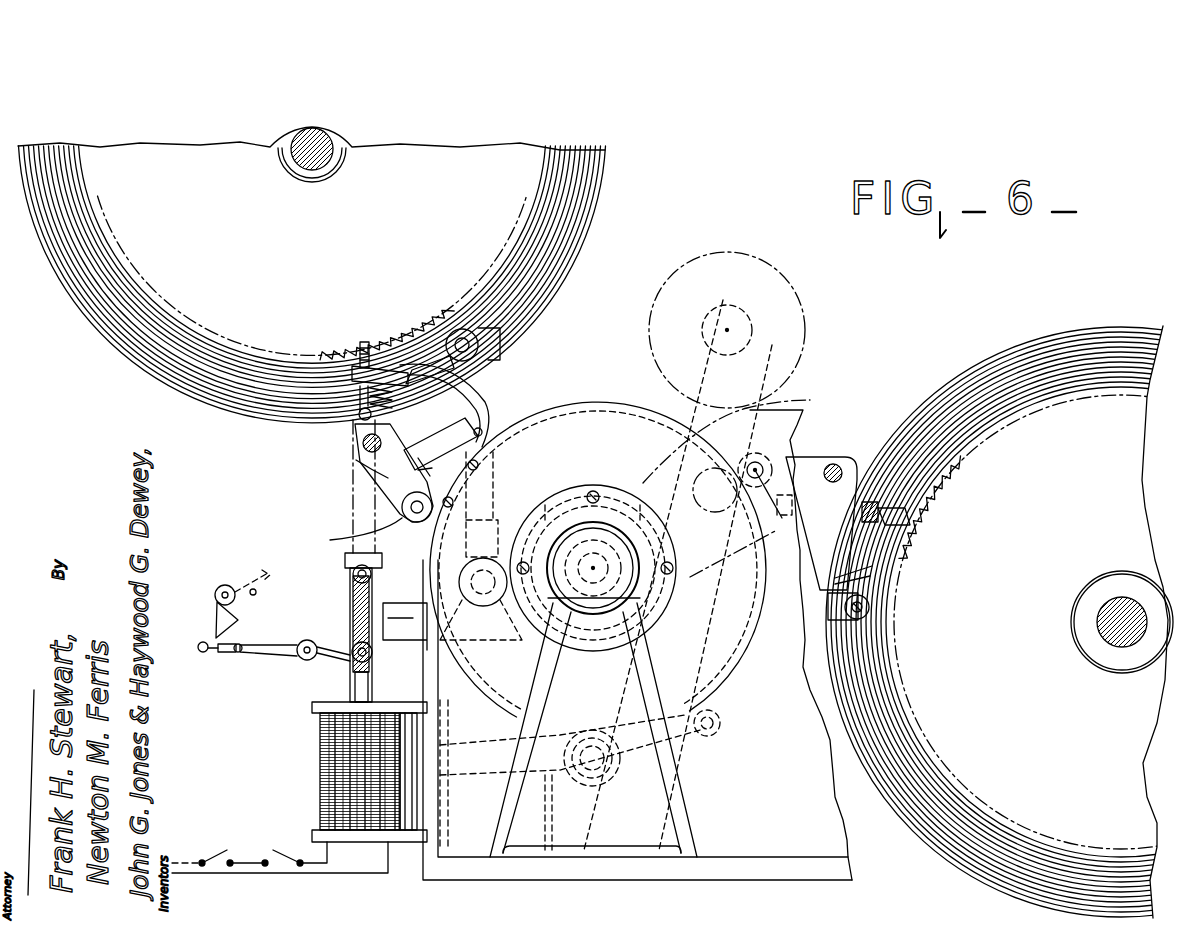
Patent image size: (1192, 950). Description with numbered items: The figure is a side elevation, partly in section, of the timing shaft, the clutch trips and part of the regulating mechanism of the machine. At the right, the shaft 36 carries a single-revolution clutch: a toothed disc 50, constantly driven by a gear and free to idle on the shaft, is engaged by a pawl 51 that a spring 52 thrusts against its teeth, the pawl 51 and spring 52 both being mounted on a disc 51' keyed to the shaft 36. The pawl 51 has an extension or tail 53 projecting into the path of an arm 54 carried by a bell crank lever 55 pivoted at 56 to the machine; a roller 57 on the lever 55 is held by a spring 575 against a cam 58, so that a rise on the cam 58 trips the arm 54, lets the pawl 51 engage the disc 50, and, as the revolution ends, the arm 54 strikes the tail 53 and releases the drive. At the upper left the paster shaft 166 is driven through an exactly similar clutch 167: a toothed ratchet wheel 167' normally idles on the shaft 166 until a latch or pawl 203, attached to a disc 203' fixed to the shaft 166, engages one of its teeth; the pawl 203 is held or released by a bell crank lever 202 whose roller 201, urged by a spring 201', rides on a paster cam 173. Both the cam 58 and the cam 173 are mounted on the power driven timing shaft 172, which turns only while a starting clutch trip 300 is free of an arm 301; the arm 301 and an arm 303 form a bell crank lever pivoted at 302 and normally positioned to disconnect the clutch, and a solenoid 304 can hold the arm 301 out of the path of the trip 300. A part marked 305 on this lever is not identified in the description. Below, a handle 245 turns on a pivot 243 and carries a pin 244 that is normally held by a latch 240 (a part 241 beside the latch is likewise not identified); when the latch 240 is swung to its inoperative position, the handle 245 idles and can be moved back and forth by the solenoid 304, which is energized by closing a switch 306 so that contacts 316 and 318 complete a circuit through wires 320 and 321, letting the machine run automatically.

The power driven shaft 166 is at (318, 162).
The single revolution clutch 167 is at (312, 275).
The toothed ratchet wheel 167' is at (323, 377).
The disc 203' is at (517, 341).
The pawl (latch) 203 is at (475, 372).
The bell crank lever 202 is at (482, 402).
The paster cam 173 is at (432, 437).
The roller 201 is at (365, 482).
The spring 201' is at (346, 464).
The solenoid 304 is at (353, 555).
The arm 303 is at (362, 582).
The pivot pin 305 is at (358, 628).
The arm 301 is at (523, 515).
The starting clutch trip 300 is at (603, 497).
The pivot 302 is at (481, 552).
The timing shaft 172 is at (596, 620).
The pivot of arm 241 is at (220, 588).
The latch 240 is at (216, 630).
The handle 245 is at (200, 655).
The pin 244 is at (240, 653).
The pivot 243 is at (308, 661).
The wire 320 is at (198, 860).
The contact 316 is at (219, 848).
The switch 306 is at (292, 852).
The wire 321 is at (281, 877).
The contact 318 is at (228, 866).
The roller 57 is at (790, 408).
The bell crank lever 55 is at (808, 456).
The pivot 56 is at (838, 465).
The spring 52 is at (864, 500).
The disc 51' is at (1009, 622).
The toothed disc 50 is at (912, 520).
The pawl 51 is at (920, 508).
The arm 54 is at (855, 573).
The extension (tail) 53 is at (866, 618).
The spring 575 is at (722, 535).
The cam 58 is at (637, 590).
The shaft 36 is at (1102, 628).